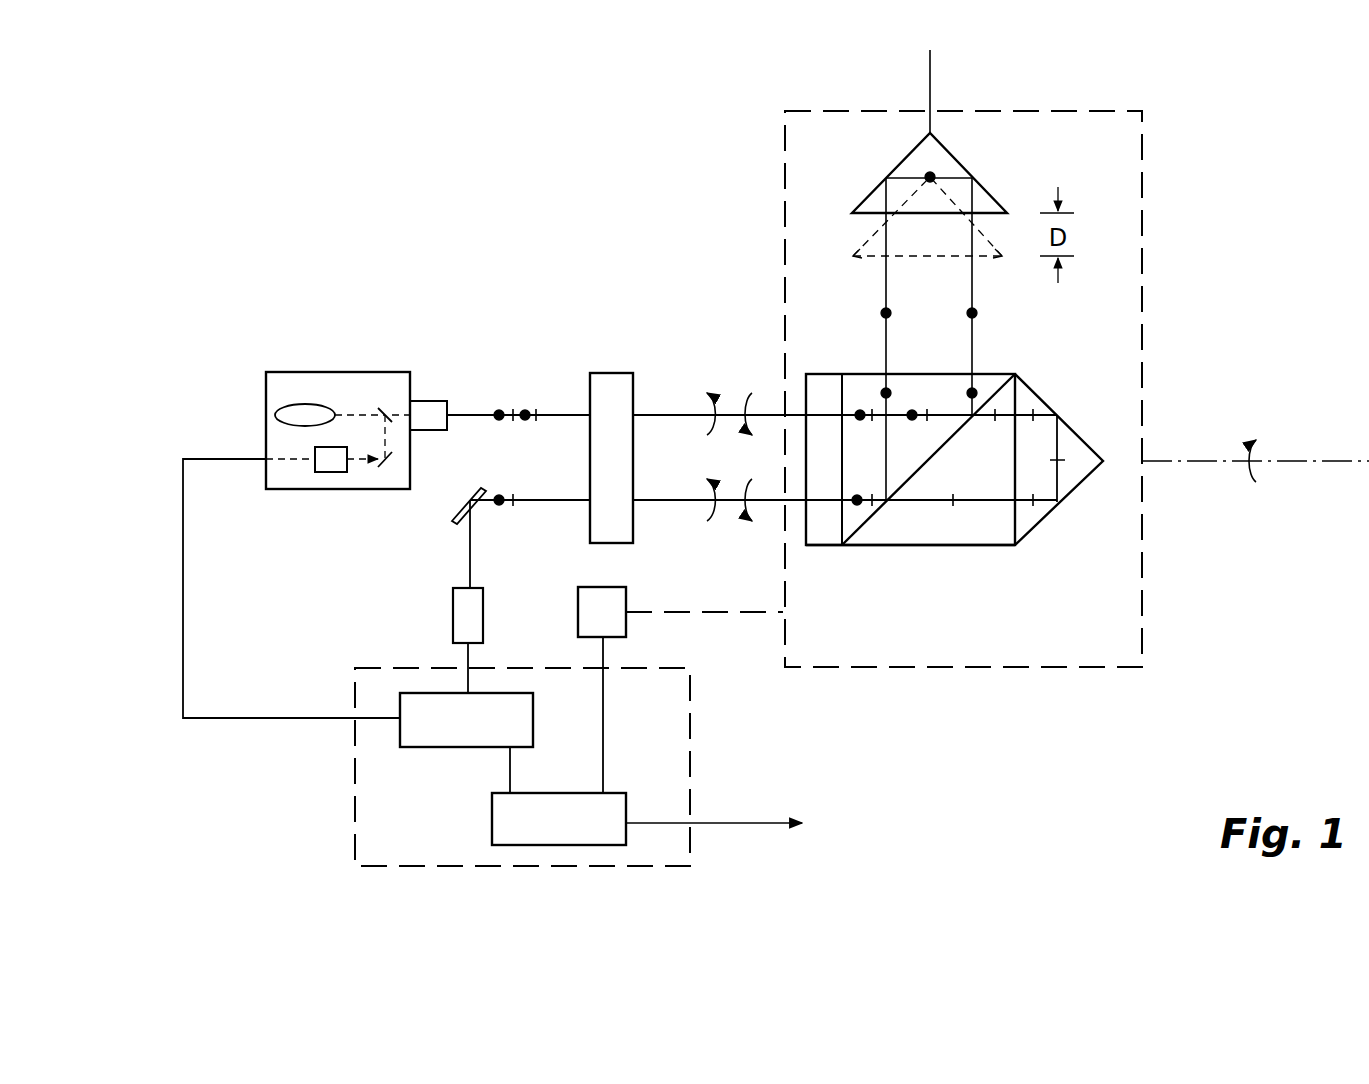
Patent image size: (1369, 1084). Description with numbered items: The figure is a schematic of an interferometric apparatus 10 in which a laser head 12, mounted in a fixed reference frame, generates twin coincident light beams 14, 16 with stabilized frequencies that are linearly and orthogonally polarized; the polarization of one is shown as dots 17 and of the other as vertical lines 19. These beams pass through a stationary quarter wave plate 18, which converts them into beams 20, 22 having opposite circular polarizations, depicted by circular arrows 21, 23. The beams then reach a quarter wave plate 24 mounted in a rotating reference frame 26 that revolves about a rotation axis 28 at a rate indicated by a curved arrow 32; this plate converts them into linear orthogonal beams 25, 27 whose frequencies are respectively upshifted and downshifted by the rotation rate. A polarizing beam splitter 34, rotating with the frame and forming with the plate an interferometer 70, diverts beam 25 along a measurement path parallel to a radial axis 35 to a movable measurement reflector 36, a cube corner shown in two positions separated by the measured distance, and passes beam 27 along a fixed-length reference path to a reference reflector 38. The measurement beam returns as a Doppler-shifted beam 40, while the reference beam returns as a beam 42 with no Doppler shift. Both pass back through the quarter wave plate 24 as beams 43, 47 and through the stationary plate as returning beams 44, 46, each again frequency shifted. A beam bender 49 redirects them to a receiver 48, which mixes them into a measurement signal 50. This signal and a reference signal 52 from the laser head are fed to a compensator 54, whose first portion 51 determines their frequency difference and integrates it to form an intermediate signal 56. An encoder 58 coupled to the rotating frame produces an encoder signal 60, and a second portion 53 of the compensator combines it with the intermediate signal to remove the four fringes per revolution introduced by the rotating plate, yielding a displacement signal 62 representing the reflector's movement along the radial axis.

The interferometric apparatus 10 is at (319, 160).
The laser head 12 is at (288, 372).
The light beam 14 is at (458, 406).
The light beam 16 is at (476, 406).
The dots 17 is at (500, 412).
The stationary quarter wave plate 18 is at (603, 373).
The vertical lines 19 is at (536, 422).
The beam 20 is at (657, 407).
The circular arrow 21 is at (712, 392).
The beam 22 is at (675, 407).
The circular arrow 23 is at (750, 392).
The quarter wave plate 24 is at (830, 373).
The beam 25 is at (862, 410).
The rotating reference frame 26 is at (836, 111).
The beam 27 is at (851, 407).
The rotation axis 28 is at (1295, 462).
The curved arrow 32 is at (1245, 442).
The polarizing beam splitter 34 is at (880, 546).
The radial axis 35 is at (930, 80).
The measurement reflector 36 is at (960, 158).
The reference reflector 38 is at (1032, 531).
The beam 40 is at (890, 283).
The beam 42 is at (923, 506).
The beam 43 is at (662, 508).
The returning beam 44 is at (553, 508).
The returning beam 46 is at (566, 508).
The beam 47 is at (770, 510).
The receiver 48 is at (453, 606).
The beam bender 49 is at (455, 516).
The measurement signal 50 is at (462, 657).
The portion of compensator 51 is at (422, 748).
The reference signal 52 is at (180, 592).
The second portion of compensator 53 is at (492, 825).
The compensator 54 is at (354, 774).
The intermediate signal 56 is at (518, 770).
The encoder 58 is at (578, 612).
The encoder signal 60 is at (612, 655).
The displacement signal 62 is at (742, 823).
The interferometer 70 is at (996, 585).